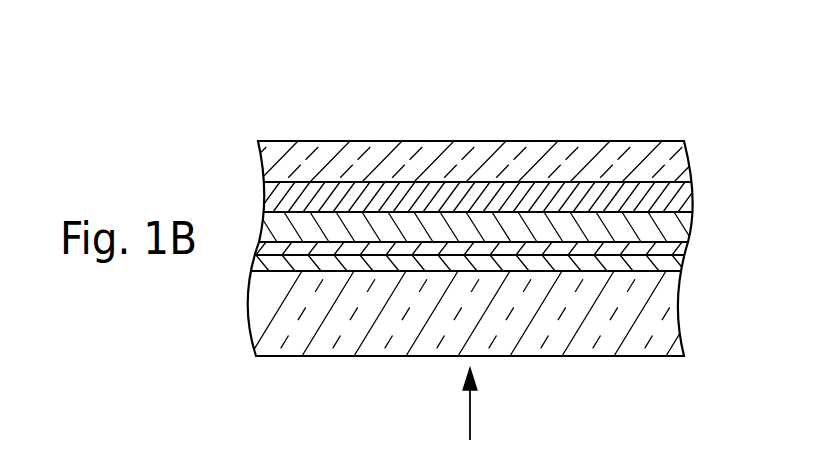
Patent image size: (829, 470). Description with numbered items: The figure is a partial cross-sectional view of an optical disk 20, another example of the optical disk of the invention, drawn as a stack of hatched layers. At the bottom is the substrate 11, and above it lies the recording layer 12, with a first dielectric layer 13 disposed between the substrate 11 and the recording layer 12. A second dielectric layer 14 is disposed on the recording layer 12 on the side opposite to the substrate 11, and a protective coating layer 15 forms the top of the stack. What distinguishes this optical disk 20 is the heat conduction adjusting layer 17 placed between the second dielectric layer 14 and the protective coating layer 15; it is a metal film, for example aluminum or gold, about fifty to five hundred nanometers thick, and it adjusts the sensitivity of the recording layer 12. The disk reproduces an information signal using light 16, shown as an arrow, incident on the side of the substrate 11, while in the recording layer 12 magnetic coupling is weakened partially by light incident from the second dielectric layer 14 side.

The optical disk 20 is at (282, 112).
The substrate 11 is at (676, 313).
The recording layer 12 is at (688, 250).
The first dielectric layer 13 is at (683, 263).
The second dielectric layer 14 is at (690, 227).
The protective coating layer 15 is at (692, 163).
The heat conduction adjusting layer 17 is at (693, 197).
The light 16 is at (470, 413).